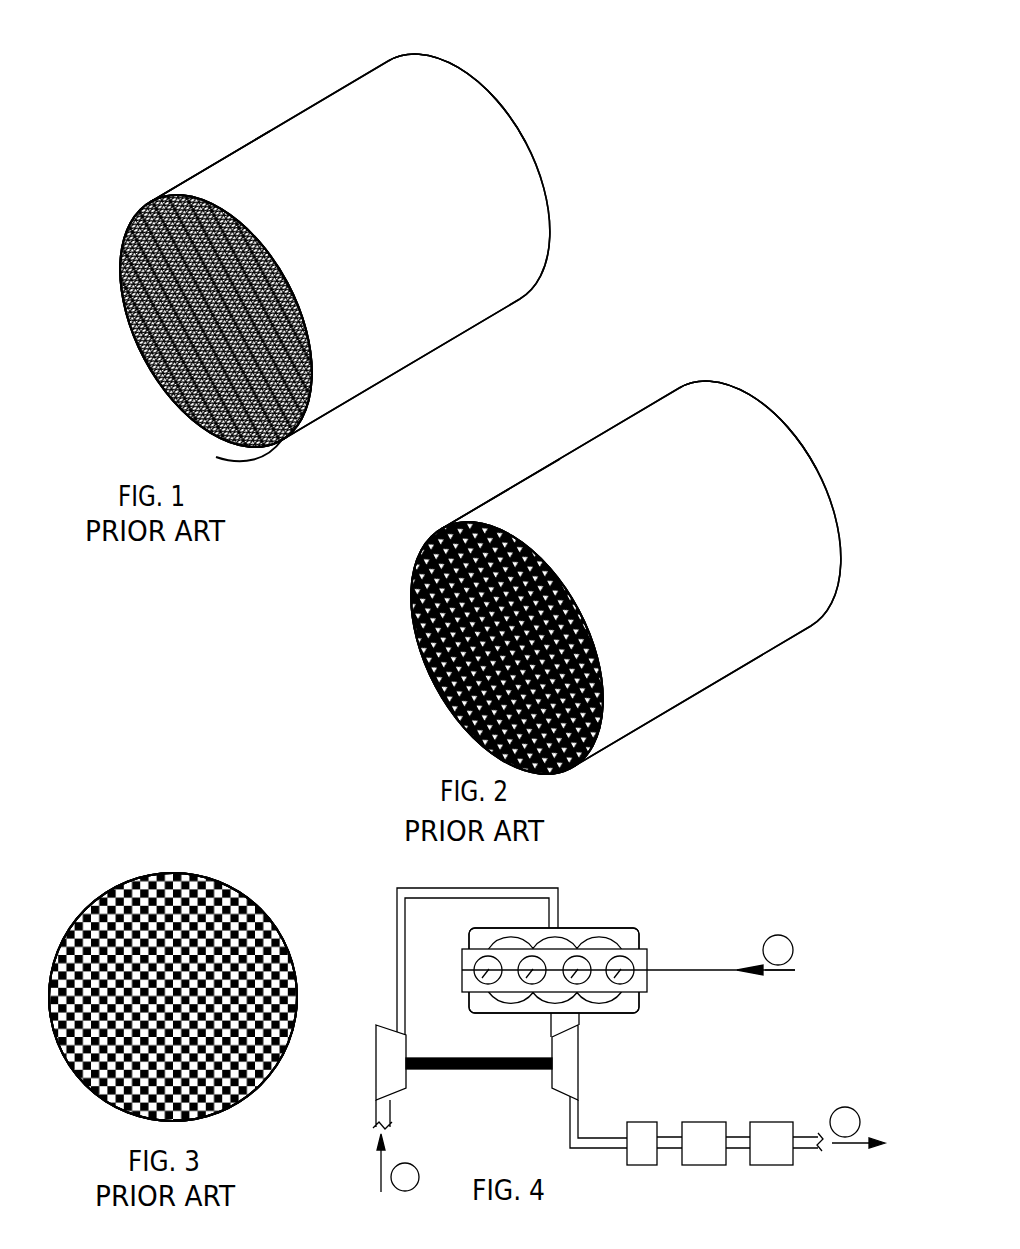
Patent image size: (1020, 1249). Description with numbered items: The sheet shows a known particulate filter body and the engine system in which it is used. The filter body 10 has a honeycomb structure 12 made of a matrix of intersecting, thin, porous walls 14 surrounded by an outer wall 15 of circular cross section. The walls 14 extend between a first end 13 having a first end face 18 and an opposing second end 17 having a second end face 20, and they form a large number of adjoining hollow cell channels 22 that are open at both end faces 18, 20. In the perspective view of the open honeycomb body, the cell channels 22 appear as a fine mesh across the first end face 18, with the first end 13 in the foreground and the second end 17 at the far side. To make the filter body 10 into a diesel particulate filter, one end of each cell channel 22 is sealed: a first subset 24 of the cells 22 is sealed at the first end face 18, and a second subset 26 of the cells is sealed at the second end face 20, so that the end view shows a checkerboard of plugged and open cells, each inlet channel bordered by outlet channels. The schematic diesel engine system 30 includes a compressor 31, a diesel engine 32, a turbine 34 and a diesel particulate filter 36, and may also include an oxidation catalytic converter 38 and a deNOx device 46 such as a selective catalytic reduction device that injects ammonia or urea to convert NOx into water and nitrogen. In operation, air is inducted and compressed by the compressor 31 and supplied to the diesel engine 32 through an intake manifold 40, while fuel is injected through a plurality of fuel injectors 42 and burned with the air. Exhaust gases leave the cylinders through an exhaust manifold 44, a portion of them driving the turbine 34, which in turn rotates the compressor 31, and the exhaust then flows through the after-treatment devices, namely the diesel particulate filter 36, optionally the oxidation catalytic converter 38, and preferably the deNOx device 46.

In FIG. 1, the filter body 10 is at (280, 46).
In FIG. 2, the filter body 10 is at (743, 352).
In FIG. 3, the filter body 10 is at (226, 840).
In FIG. 1, the honeycomb structure 12 is at (114, 229).
In FIG. 2, the honeycomb structure 12 is at (404, 554).
In FIG. 1, the first end 13 is at (217, 160).
In FIG. 2, the first end 13 is at (470, 504).
In FIG. 1, the porous walls 14 is at (125, 293).
In FIG. 1, the outer wall 15 is at (293, 128).
In FIG. 2, the outer wall 15 is at (583, 457).
In FIG. 1, the second end 17 is at (372, 65).
In FIG. 2, the second end 17 is at (662, 393).
In FIG. 1, the first end face 18 is at (311, 412).
In FIG. 2, the first end face 18 is at (601, 730).
In FIG. 1, the second end face 20 is at (485, 85).
In FIG. 2, the second end face 20 is at (774, 412).
In FIG. 3, the second end face 20 is at (297, 990).
In FIG. 1, the cell channels 22 is at (235, 437).
In FIG. 2, the first subset of cells 24 is at (423, 663).
In FIG. 3, the first subset of cells 24 is at (255, 907).
In FIG. 3, the second subset of cells 26 is at (183, 872).
In FIG. 4, the diesel engine system 30 is at (631, 857).
In FIG. 4, the compressor 31 is at (376, 1050).
In FIG. 4, the diesel engine 32 is at (603, 927).
In FIG. 4, the turbine 34 is at (582, 1045).
In FIG. 4, the diesel particulate filter 36 is at (708, 1121).
In FIG. 4, the oxidation catalytic converter 38 is at (642, 1121).
In FIG. 4, the intake manifold 40 is at (634, 940).
In FIG. 4, the fuel injectors 42 is at (683, 968).
In FIG. 4, the exhaust manifold 44 is at (640, 996).
In FIG. 4, the deNOx device 46 is at (777, 1121).